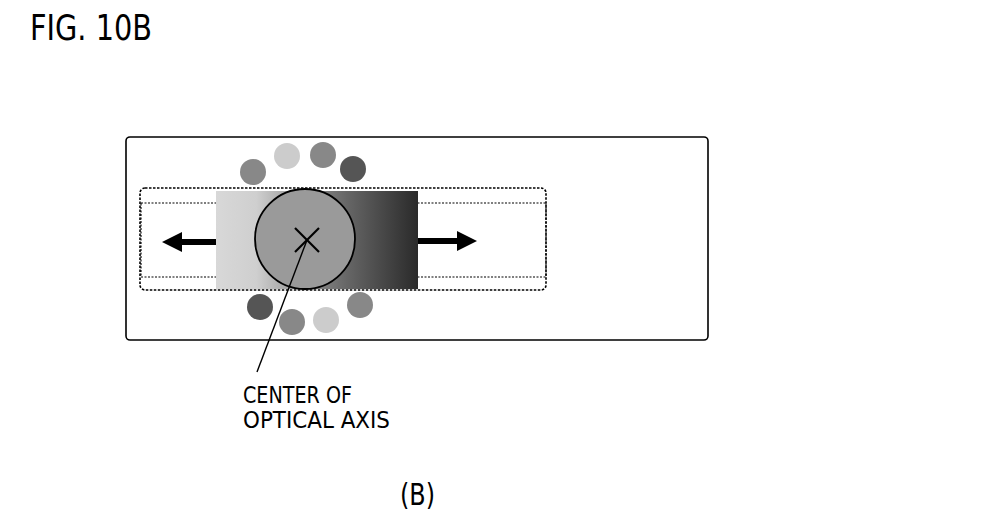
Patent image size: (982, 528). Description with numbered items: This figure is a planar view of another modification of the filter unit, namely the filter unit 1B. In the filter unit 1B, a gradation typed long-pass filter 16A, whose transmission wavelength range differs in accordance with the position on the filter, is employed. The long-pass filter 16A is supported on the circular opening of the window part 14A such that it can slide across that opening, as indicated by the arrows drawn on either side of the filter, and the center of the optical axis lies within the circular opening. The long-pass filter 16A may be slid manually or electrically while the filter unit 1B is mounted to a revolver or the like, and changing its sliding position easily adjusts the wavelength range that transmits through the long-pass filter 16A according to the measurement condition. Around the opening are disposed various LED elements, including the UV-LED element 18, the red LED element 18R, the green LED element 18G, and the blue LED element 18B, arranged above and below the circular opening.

The filter unit 1B is at (724, 80).
The window part 14A is at (140, 270).
The gradation typed long-pass filter 16A is at (402, 260).
The red LED element 18R is at (247, 165).
The green LED element 18G is at (280, 148).
The blue LED element 18B is at (324, 157).
The UV-LED element 18 is at (358, 168).